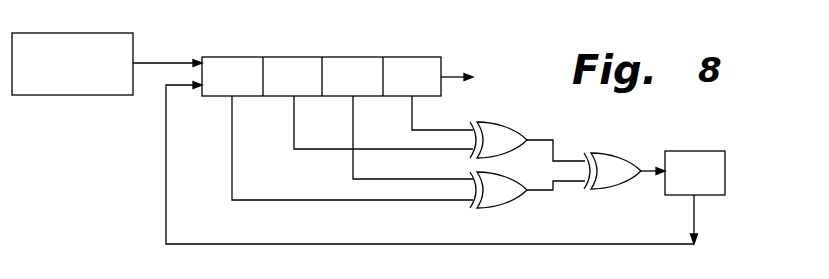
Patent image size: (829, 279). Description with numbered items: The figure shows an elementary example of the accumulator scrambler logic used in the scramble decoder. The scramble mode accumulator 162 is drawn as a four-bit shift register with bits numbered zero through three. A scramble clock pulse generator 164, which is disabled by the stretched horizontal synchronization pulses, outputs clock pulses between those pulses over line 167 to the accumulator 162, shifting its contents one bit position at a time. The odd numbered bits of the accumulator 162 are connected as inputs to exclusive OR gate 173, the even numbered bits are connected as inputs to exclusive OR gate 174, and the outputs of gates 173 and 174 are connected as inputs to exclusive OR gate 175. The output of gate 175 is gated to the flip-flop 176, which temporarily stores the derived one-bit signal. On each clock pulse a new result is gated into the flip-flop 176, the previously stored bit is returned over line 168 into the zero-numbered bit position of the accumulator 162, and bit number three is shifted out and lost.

The scramble clock pulse generator 164 is at (133, 33).
The line 167 is at (170, 63).
The scramble mode accumulator 162 is at (283, 57).
The line 168 is at (166, 177).
The exclusive OR gate 173 is at (495, 122).
The exclusive OR gate 174 is at (500, 208).
The exclusive OR gate 175 is at (636, 136).
The flip-flop 176 is at (725, 151).